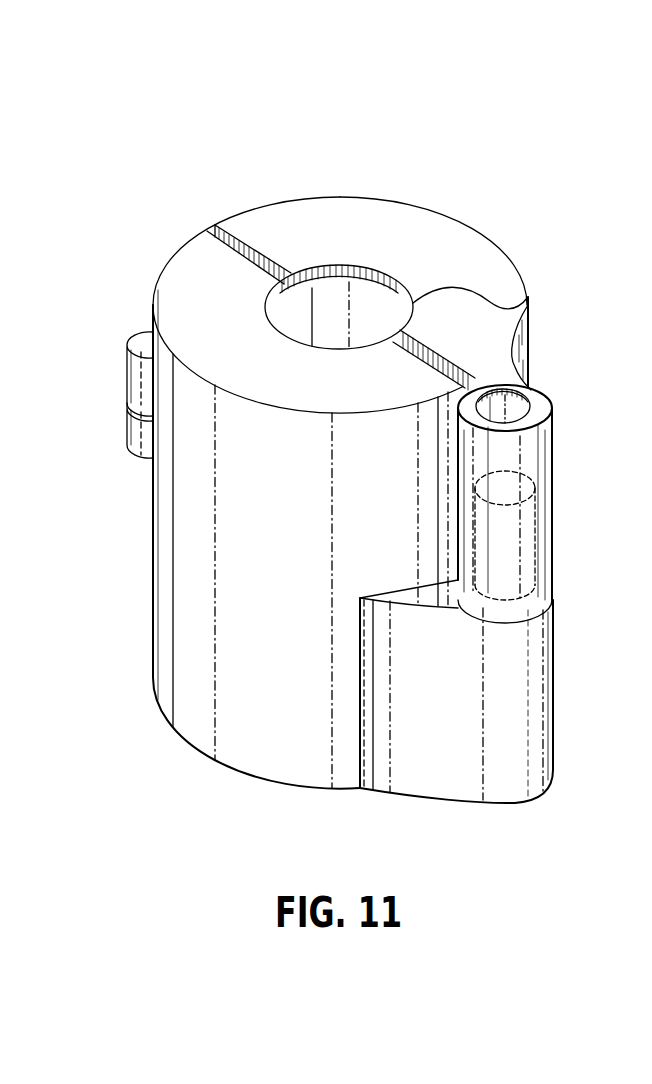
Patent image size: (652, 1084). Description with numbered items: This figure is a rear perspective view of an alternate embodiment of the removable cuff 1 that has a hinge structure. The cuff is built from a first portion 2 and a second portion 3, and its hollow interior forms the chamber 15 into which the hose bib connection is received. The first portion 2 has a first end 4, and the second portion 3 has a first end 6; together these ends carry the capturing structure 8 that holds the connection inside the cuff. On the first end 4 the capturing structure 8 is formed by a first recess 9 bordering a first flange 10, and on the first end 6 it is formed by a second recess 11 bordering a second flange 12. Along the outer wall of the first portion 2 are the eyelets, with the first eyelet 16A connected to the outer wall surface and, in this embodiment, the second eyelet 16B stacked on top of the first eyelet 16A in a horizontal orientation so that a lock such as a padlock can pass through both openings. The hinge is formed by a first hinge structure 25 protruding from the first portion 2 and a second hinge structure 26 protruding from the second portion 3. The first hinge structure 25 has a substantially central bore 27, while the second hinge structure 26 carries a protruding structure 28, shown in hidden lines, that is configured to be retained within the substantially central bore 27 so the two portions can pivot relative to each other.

The removable cuff 1 is at (172, 182).
The first portion 2 is at (520, 360).
The second portion 3 is at (178, 652).
The first end 4 is at (492, 268).
The first end 6 is at (185, 278).
The capturing structure 8 is at (360, 276).
The first recess 9 is at (394, 282).
The first flange 10 is at (545, 290).
The second recess 11 is at (268, 320).
The second flange 12 is at (260, 367).
The chamber 15 is at (323, 298).
The first eyelet 16A is at (133, 422).
The second eyelet 16B is at (132, 370).
The first hinge structure 25 is at (535, 467).
The second hinge structure 26 is at (537, 703).
The substantially central bore 27 is at (519, 401).
The protruding structure 28 is at (523, 545).